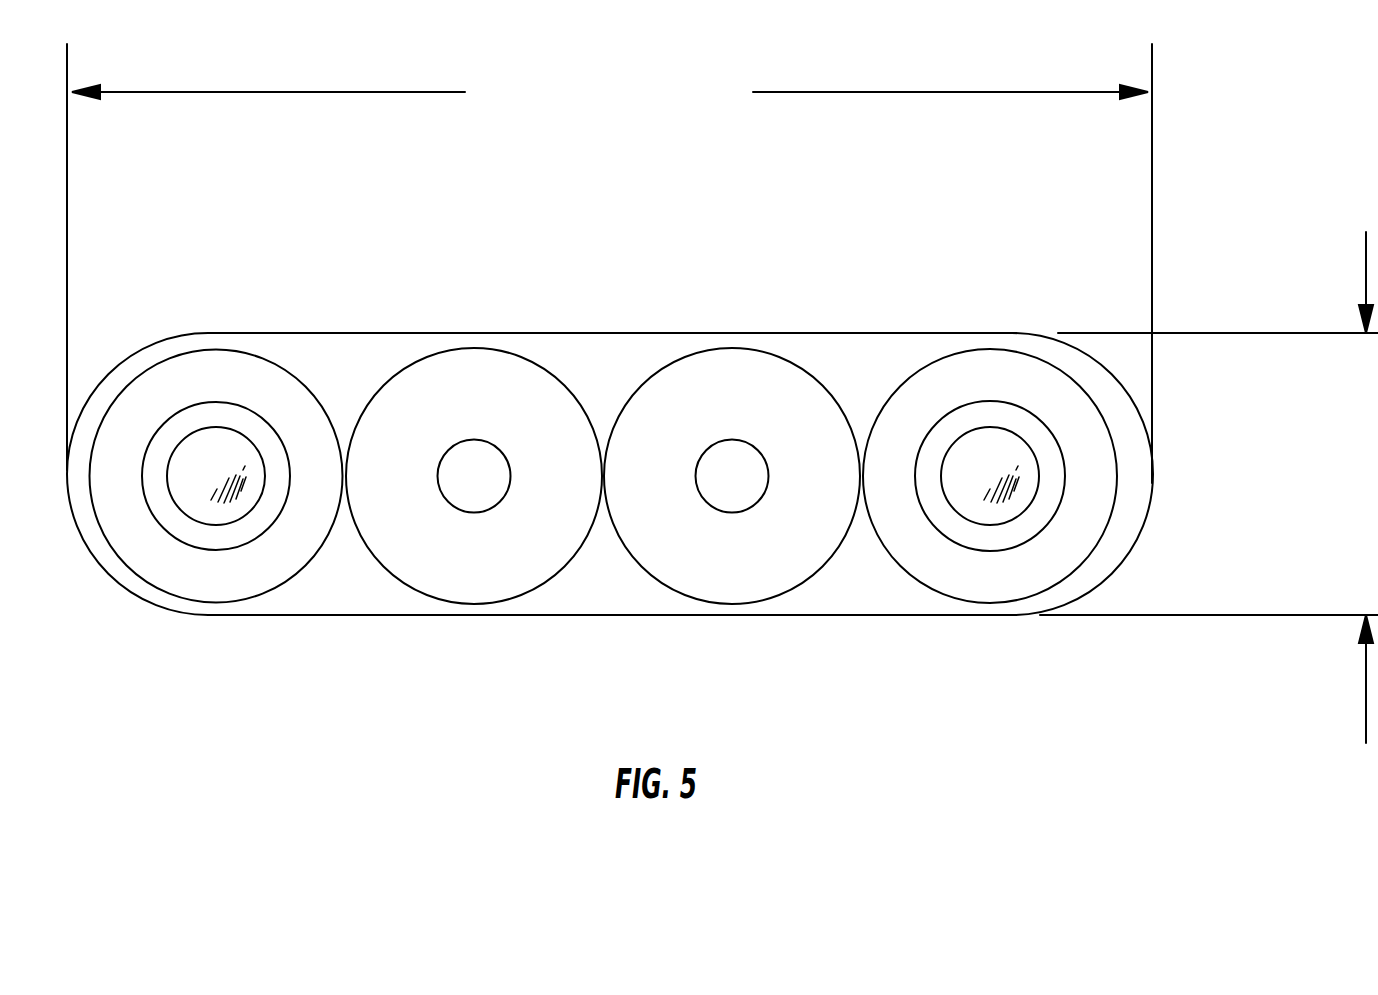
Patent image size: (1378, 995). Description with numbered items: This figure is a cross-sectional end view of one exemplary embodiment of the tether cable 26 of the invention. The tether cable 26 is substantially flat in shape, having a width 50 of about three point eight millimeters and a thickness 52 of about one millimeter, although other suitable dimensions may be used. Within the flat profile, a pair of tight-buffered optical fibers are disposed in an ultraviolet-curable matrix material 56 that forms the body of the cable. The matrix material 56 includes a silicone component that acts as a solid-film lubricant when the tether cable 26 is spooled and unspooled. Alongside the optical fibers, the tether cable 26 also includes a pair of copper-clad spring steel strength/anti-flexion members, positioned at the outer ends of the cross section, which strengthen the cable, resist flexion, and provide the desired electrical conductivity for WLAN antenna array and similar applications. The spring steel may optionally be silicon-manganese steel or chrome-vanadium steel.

The tether cable 26 is at (941, 333).
The width 50 is at (596, 111).
The thickness 52 is at (1281, 481).
The UV-curable matrix material 56 is at (827, 615).